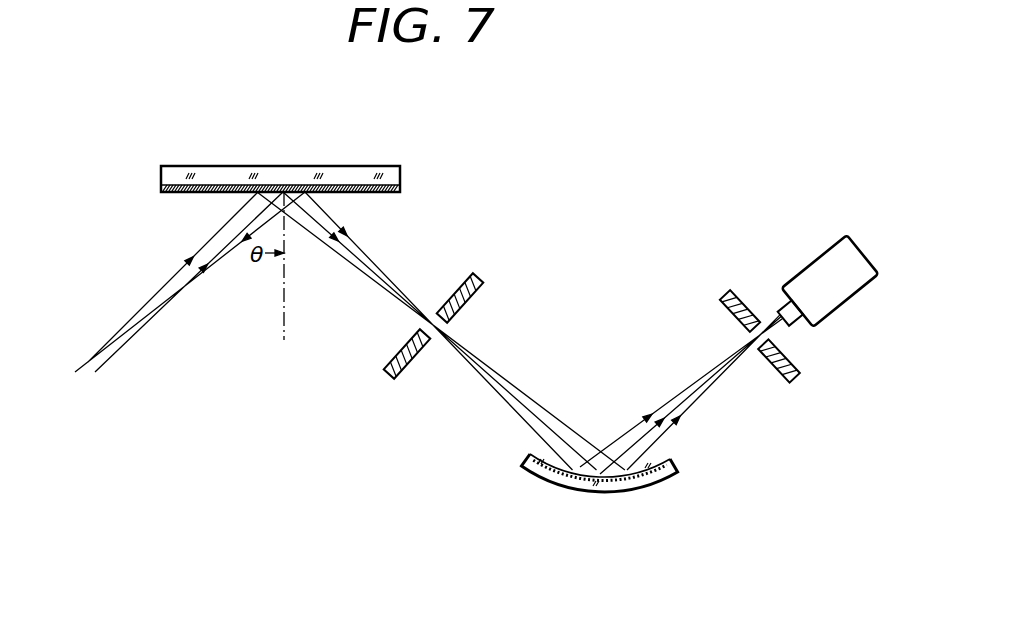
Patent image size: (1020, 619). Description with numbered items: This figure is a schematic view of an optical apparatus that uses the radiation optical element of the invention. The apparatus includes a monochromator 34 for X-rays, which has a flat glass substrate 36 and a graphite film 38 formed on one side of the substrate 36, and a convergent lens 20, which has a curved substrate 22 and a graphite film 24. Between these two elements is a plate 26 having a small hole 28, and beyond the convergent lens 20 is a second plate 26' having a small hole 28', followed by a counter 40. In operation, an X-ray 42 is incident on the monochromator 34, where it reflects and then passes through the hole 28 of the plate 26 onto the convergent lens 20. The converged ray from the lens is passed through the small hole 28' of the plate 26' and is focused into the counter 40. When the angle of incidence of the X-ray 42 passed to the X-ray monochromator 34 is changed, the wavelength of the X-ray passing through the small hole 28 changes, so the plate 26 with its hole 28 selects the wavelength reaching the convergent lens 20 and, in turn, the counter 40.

The convergent lens 20 is at (615, 561).
The curved substrate 22 is at (665, 478).
The graphite film 24 is at (672, 459).
The plate 26 is at (458, 309).
The small hole 28 is at (478, 336).
The plate 26' is at (748, 318).
The small hole 28' is at (722, 346).
The monochromator for X-rays 34 is at (447, 125).
The flat glass substrate 36 is at (284, 168).
The graphite film 38 is at (400, 187).
The counter 40 is at (807, 276).
The X-ray 42 is at (113, 350).